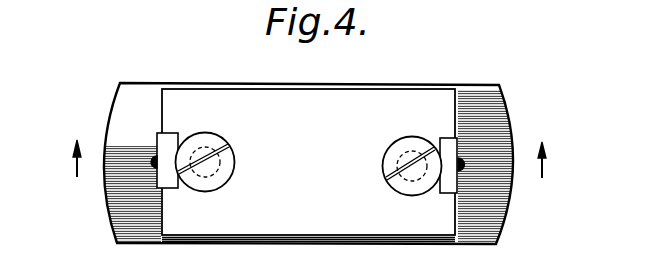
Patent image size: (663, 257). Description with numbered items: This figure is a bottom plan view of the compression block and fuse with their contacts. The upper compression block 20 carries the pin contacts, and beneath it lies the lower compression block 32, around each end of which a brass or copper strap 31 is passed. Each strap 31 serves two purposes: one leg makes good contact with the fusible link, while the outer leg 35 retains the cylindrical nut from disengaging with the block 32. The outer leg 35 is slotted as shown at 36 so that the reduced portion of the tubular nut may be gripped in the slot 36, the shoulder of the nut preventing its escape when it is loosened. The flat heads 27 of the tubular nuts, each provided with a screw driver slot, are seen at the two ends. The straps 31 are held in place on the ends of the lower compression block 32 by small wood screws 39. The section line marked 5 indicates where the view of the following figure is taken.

The upper compression block 20 is at (141, 90).
The strap 31 is at (150, 174).
The lower compression block 32 is at (336, 107).
The outer leg 35 is at (175, 189).
The slot 36 is at (225, 188).
The flat head 27 is at (203, 136).
The wood screws 39 is at (152, 160).
The section line of FIG. 5 is at (100, 162).